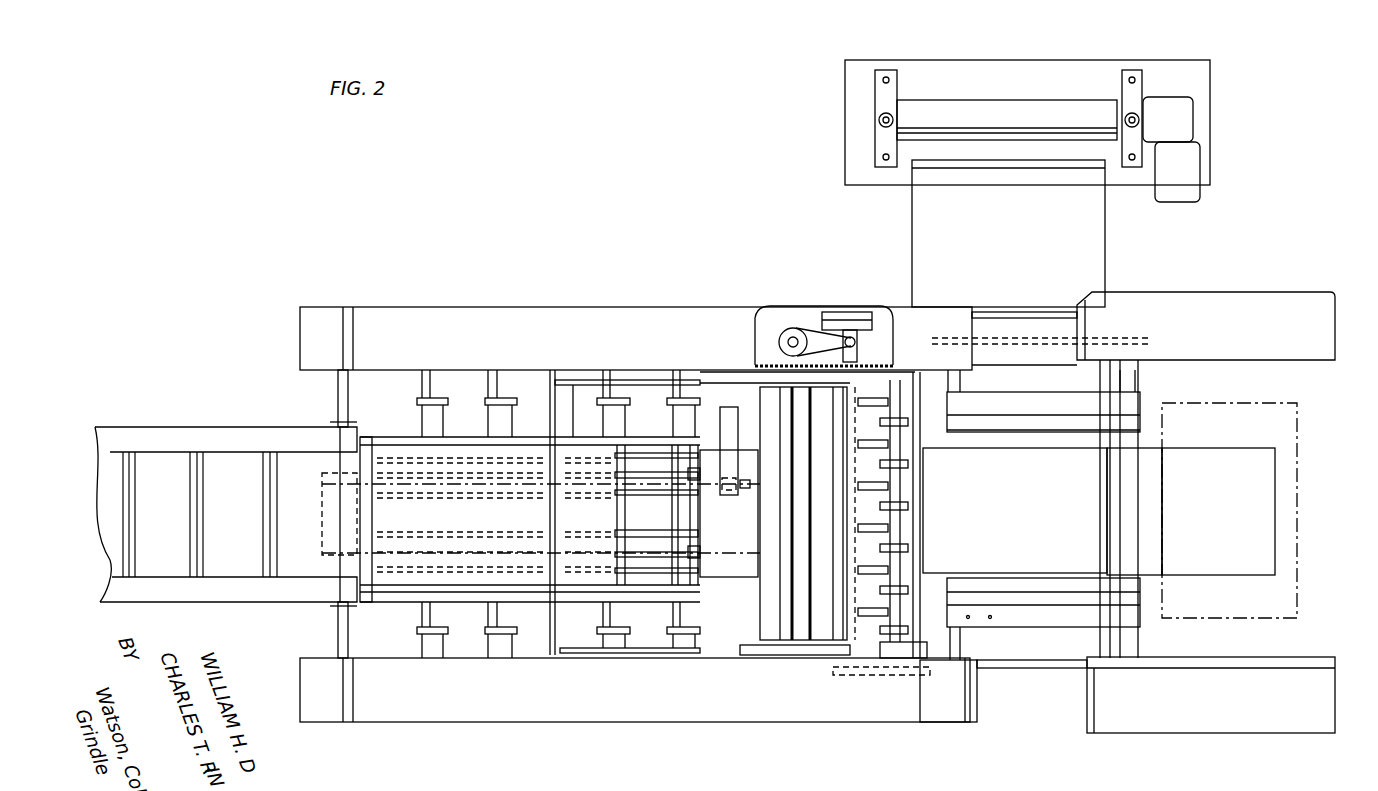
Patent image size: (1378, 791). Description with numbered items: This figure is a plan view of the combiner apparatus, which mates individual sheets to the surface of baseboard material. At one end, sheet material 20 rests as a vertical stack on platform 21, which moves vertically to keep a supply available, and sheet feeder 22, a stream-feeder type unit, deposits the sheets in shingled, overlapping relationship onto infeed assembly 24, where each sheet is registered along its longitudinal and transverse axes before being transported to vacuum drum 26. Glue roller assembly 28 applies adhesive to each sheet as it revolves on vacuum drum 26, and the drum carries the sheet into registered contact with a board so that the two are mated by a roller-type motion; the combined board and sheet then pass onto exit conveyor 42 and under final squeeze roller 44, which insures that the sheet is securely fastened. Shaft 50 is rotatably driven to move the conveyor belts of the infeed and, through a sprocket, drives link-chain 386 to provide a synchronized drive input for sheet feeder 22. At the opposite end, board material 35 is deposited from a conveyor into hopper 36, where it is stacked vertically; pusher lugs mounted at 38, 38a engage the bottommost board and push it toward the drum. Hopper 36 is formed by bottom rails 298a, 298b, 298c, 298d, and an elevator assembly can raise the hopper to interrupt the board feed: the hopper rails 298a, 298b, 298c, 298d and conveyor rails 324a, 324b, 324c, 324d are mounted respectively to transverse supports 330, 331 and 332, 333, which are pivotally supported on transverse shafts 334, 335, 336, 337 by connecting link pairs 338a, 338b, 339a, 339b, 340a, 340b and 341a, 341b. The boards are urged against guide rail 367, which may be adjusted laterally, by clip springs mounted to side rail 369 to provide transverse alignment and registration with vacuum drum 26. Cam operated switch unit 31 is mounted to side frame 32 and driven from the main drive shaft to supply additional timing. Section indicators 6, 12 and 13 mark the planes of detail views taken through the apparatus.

The section line 6- 6 is at (1338, 567).
The section line 12- 12 is at (751, 462).
The section line 13- 13 is at (232, 705).
The sheet material 20 is at (1218, 526).
The platform 21 is at (1297, 608).
The sheet feeder 22 is at (1143, 518).
The infeed assembly 24 is at (1043, 518).
The vacuum drum 26 is at (925, 542).
The glue roller assembly 28 is at (770, 395).
The cam operated switch unit 31 is at (798, 330).
The side frame 32 is at (823, 706).
The board material 35 is at (250, 528).
The hopper 36 is at (470, 569).
The lug mounting position 38 is at (532, 550).
The lug mounting position 38a is at (720, 440).
The exit conveyor 42 is at (1024, 254).
The final squeeze roller 44 is at (1162, 78).
The shaft 50 is at (945, 357).
The bottom rail 298a is at (410, 580).
The bottom rail 298b is at (432, 532).
The bottom rail 298c is at (432, 498).
The bottom rail 298d is at (405, 458).
The conveyor rail 324a is at (660, 572).
The conveyor rail 324b is at (668, 548).
The conveyor rail 324c is at (672, 492).
The conveyor rail 324d is at (645, 455).
The transverse support 330 is at (433, 630).
The transverse support 331 is at (504, 618).
The transverse support 332 is at (632, 630).
The transverse support 333 is at (685, 634).
The transverse shaft 334 is at (418, 630).
The transverse shaft 335 is at (430, 630).
The transverse shaft 336 is at (600, 604).
The transverse shaft 337 is at (672, 634).
The connecting link 338a is at (436, 634).
The connecting link 338b is at (433, 398).
The connecting link 339a is at (500, 634).
The connecting link 339b is at (500, 398).
The connecting link 340a is at (615, 634).
The connecting link 340b is at (614, 398).
The connecting link 341a is at (690, 634).
The connecting link 341b is at (682, 398).
The guide rail 367 is at (563, 380).
The side rail 369 is at (600, 588).
The link-chain 386 is at (1033, 338).